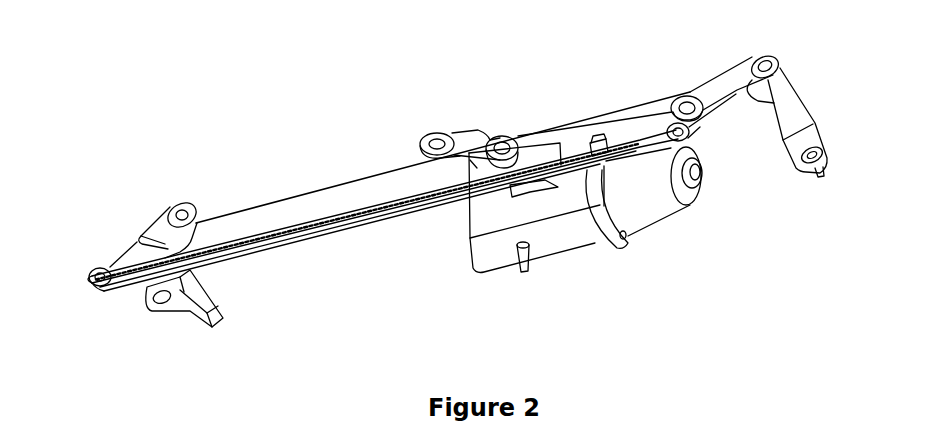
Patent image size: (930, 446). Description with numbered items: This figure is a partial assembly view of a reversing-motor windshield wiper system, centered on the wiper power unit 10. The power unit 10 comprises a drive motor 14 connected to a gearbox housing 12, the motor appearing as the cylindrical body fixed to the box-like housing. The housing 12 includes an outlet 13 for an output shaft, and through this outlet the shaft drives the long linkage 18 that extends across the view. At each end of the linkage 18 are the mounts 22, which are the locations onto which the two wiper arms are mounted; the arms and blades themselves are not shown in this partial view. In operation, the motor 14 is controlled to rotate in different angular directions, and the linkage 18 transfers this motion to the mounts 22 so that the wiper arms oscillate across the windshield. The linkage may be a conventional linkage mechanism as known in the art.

The wiper power unit 10 is at (647, 229).
The gearbox housing 12 is at (509, 274).
The outlet 13 is at (520, 150).
The drive motor 14 is at (693, 208).
The linkage 18 is at (327, 188).
The mounts 22 is at (168, 312).